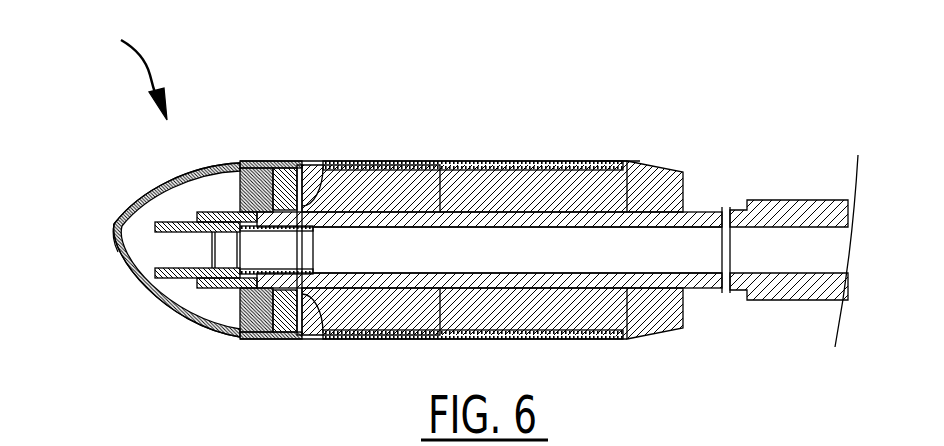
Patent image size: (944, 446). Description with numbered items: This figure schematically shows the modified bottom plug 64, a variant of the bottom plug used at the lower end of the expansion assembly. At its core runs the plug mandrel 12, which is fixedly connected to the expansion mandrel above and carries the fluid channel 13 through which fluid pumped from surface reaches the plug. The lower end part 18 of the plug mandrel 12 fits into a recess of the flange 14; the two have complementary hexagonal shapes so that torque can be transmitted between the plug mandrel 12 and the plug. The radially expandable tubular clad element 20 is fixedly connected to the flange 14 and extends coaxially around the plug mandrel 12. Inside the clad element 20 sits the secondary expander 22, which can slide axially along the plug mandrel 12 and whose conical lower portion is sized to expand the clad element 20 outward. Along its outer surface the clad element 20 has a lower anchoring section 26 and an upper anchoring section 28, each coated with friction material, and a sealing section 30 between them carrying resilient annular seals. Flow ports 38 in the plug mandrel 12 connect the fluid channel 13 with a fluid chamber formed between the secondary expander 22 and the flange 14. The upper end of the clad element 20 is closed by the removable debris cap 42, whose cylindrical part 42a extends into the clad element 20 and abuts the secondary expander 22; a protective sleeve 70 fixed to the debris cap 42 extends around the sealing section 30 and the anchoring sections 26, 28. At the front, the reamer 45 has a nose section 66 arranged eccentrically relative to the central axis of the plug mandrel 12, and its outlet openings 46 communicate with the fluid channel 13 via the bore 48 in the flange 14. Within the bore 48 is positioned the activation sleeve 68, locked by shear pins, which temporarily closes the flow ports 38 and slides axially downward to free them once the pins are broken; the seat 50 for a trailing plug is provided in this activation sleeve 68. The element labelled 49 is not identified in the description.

The plug mandrel 12 is at (712, 210).
The fluid channel 13 is at (578, 260).
The flange 14 is at (242, 183).
The lower end part 18 is at (268, 175).
The clad element 20 is at (450, 161).
The secondary expander 22 is at (357, 161).
The lower anchoring section 26 is at (412, 161).
The upper anchoring section 28 is at (582, 161).
The sealing section 30 is at (497, 161).
The flow ports 38 is at (316, 160).
The debris cap 42 is at (665, 167).
The cylindrical part 42a is at (603, 188).
The reamer 45 is at (198, 165).
The outlet openings 46 is at (110, 225).
The bore 48 is at (222, 257).
The dome lower wall 49 is at (182, 308).
The seat 50 is at (248, 256).
The modified bottom plug 64 is at (129, 64).
The nose section 66 is at (115, 218).
The activation sleeve 68 is at (305, 161).
The protective sleeve 70 is at (550, 161).